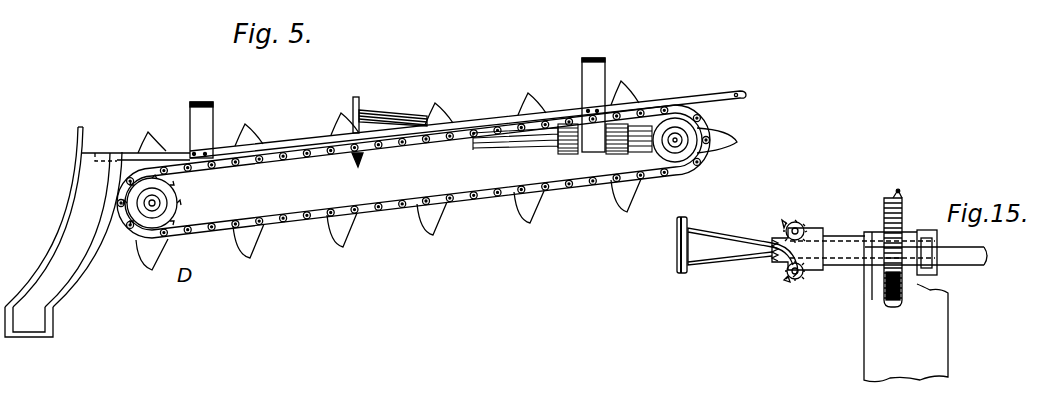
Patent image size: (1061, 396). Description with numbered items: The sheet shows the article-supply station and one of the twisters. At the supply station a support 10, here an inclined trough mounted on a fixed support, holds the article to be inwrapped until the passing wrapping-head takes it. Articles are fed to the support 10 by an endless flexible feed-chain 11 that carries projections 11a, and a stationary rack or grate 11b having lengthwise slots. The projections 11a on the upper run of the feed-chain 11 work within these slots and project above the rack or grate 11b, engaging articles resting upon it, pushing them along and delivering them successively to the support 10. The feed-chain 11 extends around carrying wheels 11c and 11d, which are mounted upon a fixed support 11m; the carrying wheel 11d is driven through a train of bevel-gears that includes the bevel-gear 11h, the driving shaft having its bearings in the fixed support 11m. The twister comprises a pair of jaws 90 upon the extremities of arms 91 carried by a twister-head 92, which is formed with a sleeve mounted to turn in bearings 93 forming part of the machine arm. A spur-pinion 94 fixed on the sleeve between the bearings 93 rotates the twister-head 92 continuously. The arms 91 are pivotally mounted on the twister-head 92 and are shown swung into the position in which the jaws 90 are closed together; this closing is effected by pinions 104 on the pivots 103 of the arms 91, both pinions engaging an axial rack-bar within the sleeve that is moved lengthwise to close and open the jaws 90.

In FIG. 5, the support 10 is at (47, 255).
In FIG. 5, the feed-chain 11 is at (407, 230).
In FIG. 5, the projections 11a is at (525, 93).
In FIG. 5, the rack or grate 11b is at (285, 145).
In FIG. 5, the carrying wheel 11c is at (182, 194).
In FIG. 5, the carrying wheel 11d is at (702, 122).
In FIG. 5, the bevel-gear 11h is at (360, 105).
In FIG. 5, the fixed support 11m is at (416, 110).
In FIG. 15, the jaws 90 is at (678, 247).
In FIG. 15, the arms 91 is at (725, 231).
In FIG. 15, the twister-head 92 is at (817, 229).
In FIG. 15, the bearings 93 is at (873, 232).
In FIG. 15, the spur-pinion 94 is at (899, 190).
In FIG. 15, the pivots 103 is at (800, 222).
In FIG. 15, the pinions 104 is at (788, 222).